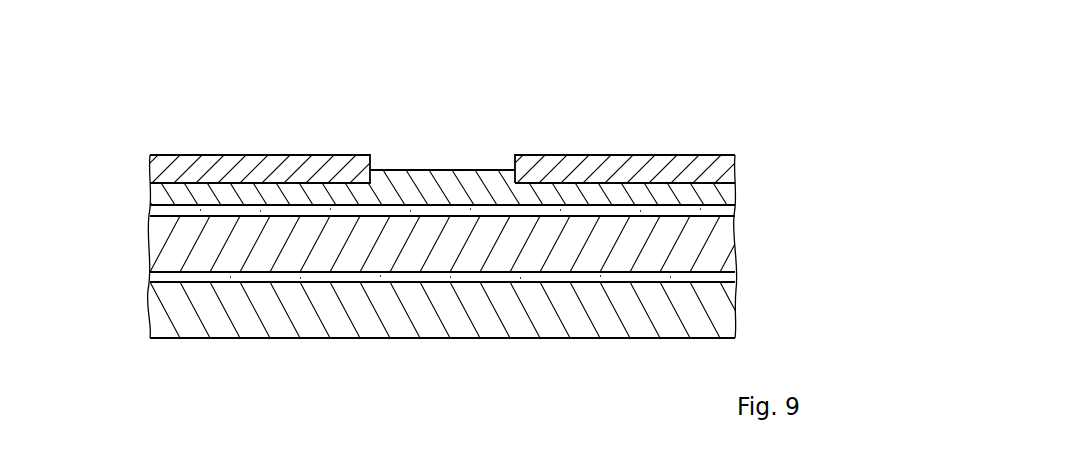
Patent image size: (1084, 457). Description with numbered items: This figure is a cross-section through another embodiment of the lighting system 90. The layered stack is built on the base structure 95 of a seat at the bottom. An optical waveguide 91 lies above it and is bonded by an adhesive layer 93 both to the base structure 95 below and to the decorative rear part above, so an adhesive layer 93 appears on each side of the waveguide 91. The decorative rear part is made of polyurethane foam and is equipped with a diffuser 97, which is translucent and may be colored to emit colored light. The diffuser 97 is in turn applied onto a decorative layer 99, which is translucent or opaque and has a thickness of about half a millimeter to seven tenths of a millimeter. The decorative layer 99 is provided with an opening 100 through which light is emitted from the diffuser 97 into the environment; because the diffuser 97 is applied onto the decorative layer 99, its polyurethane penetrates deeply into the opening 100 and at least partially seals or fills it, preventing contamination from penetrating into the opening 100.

The lighting system 90 is at (193, 125).
The opening 100 is at (434, 169).
The decorative layer 99 is at (737, 167).
The diffuser 97 is at (737, 193).
The adhesive layer 93 is at (150, 208).
The carrier layer 91 is at (737, 241).
The base structure 95 is at (737, 310).